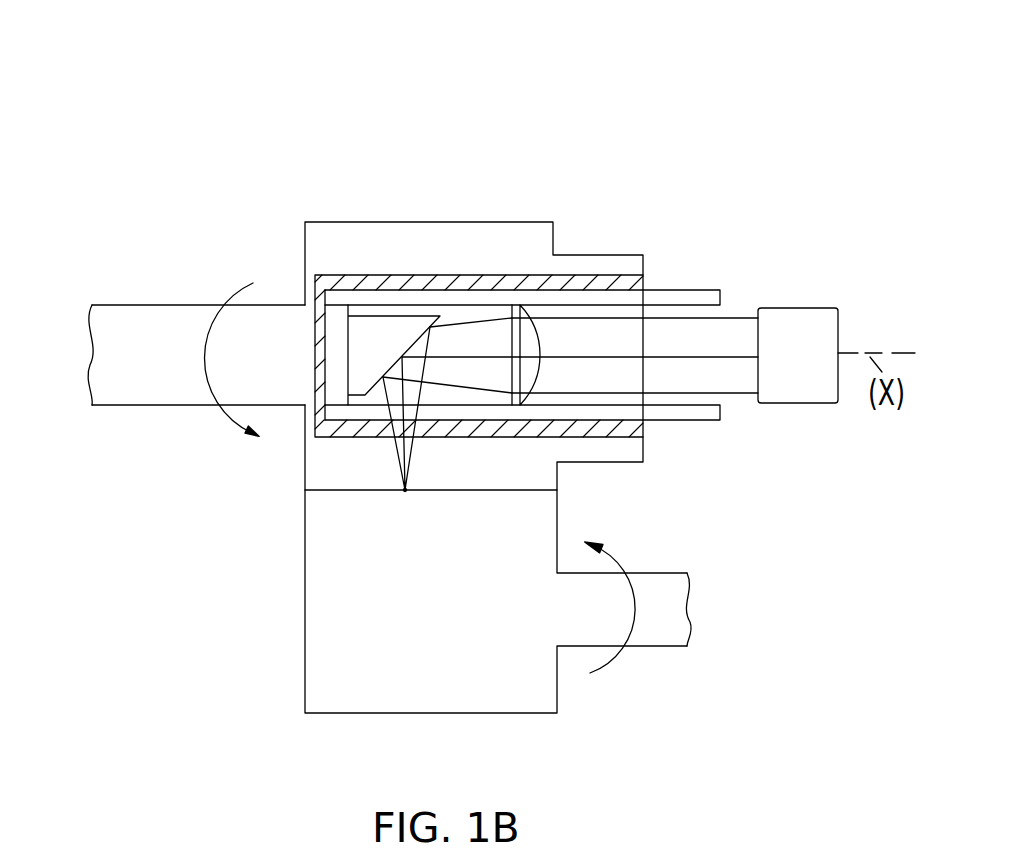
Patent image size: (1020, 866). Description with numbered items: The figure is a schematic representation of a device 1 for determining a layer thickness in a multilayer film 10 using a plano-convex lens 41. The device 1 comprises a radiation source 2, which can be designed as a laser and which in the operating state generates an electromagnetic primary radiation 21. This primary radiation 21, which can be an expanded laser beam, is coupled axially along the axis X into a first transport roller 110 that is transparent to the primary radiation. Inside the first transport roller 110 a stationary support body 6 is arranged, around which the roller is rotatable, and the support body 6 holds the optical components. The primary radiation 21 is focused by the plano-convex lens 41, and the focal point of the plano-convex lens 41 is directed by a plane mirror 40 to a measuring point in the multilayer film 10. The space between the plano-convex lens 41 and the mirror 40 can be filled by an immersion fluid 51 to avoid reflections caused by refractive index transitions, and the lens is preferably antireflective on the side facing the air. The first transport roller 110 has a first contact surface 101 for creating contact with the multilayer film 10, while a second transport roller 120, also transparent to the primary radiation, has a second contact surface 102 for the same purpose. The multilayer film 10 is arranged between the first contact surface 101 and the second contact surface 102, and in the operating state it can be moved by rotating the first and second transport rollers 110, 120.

The device 1 is at (350, 105).
The first transport roller 110 is at (365, 311).
The first contact surface 101 is at (328, 222).
The second transport roller 120 is at (498, 632).
The second contact surface 102 is at (408, 695).
The support body 6 is at (685, 297).
The plane mirror 40 is at (378, 330).
The immersion fluid 51 is at (470, 325).
The plano-convex lens 41 is at (537, 348).
The primary radiation 21 is at (722, 357).
The radiation source 2 is at (806, 318).
The multilayer film 10 is at (405, 490).